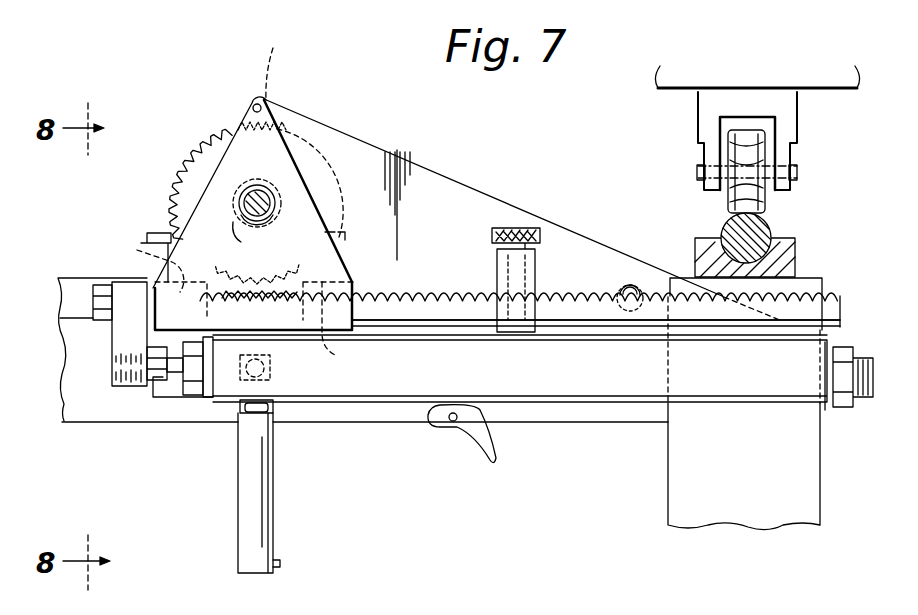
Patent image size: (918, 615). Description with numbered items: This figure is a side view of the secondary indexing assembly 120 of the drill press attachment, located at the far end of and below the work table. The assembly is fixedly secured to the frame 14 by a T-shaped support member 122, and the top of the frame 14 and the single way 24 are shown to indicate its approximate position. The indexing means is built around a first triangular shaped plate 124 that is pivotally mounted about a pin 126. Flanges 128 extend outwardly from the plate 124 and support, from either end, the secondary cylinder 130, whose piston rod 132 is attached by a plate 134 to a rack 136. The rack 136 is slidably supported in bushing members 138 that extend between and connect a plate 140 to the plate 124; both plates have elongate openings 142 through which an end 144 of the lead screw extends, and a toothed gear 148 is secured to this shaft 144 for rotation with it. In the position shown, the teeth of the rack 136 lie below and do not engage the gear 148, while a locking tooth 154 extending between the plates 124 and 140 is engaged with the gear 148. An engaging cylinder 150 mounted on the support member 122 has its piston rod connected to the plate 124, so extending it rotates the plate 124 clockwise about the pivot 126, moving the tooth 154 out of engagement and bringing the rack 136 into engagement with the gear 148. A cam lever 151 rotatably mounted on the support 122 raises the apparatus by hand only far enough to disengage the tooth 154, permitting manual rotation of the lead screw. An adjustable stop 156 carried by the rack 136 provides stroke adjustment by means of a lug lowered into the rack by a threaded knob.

The frame 14 is at (807, 287).
The way 24 is at (772, 212).
The secondary indexing assembly 120 is at (366, 134).
The T-shaped support member 122 is at (78, 292).
The first triangular shaped plate 124 is at (440, 200).
The pin 126 is at (633, 288).
The flanges 128 is at (207, 392).
The secondary cylinder 130 is at (497, 371).
The piston rod 132 is at (173, 373).
The plate 134 is at (125, 385).
The rack 136 is at (445, 310).
The bushing members 138 is at (236, 299).
The plate 140 is at (295, 266).
The elongate openings 142 is at (247, 229).
The end of the lead screw 144 is at (252, 185).
The toothed gear 148 is at (192, 165).
The engaging cylinder 150 is at (253, 520).
The cam lever 151 is at (480, 453).
The locking tooth 154 is at (279, 64).
The adjustable stop 156 is at (538, 260).